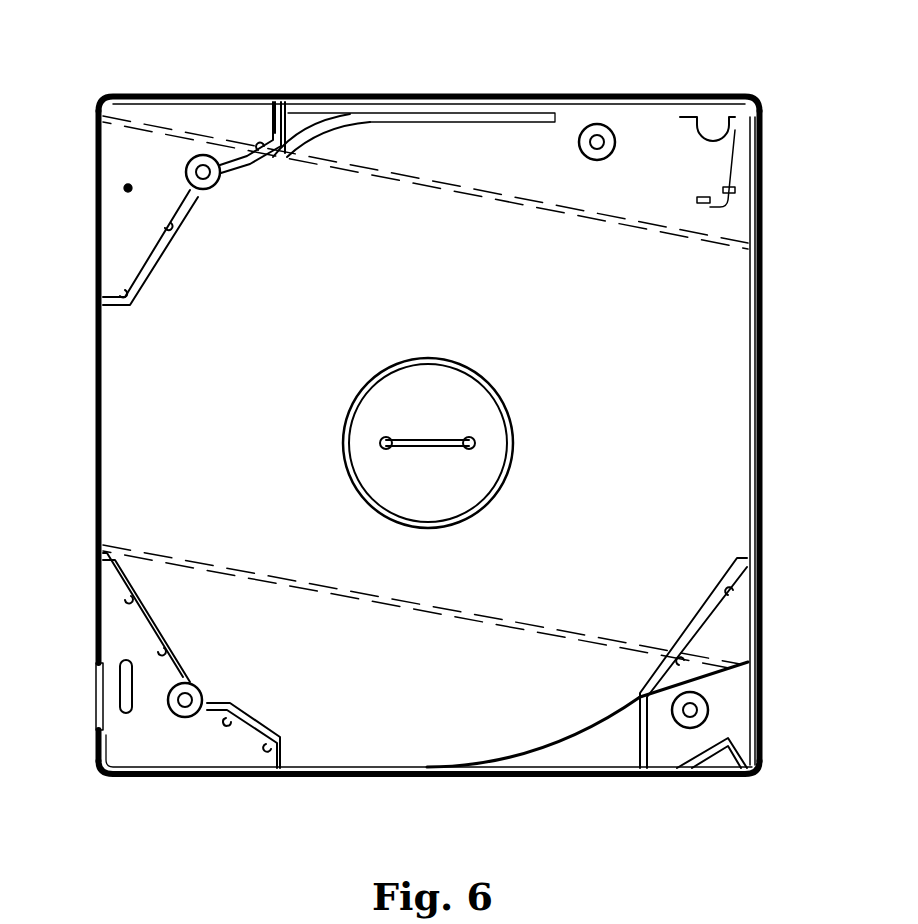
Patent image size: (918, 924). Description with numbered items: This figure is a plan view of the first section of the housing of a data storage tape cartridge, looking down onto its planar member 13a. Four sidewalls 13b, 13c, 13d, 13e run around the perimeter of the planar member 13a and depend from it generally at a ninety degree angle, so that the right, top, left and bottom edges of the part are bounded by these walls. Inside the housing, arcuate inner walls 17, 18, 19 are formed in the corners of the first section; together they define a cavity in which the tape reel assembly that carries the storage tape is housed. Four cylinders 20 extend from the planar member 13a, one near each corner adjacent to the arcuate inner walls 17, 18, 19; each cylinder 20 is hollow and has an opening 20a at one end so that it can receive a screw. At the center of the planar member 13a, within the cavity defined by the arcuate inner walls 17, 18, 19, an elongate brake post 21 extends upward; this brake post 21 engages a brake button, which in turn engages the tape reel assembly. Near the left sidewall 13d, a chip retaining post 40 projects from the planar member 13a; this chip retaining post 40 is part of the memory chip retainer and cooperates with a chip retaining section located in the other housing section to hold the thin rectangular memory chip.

The planar member 13a is at (140, 433).
The sidewall 13b is at (762, 478).
The sidewall 13c is at (362, 93).
The sidewall 13d is at (97, 279).
The sidewall 13e is at (395, 778).
The arcuate inner wall 17 is at (152, 262).
The arcuate inner wall 18 is at (160, 637).
The arcuate inner wall 19 is at (700, 632).
The cylinder 20 is at (206, 175).
The opening 20a is at (598, 140).
The brake post 21 is at (432, 442).
The chip retaining post 40 is at (125, 187).